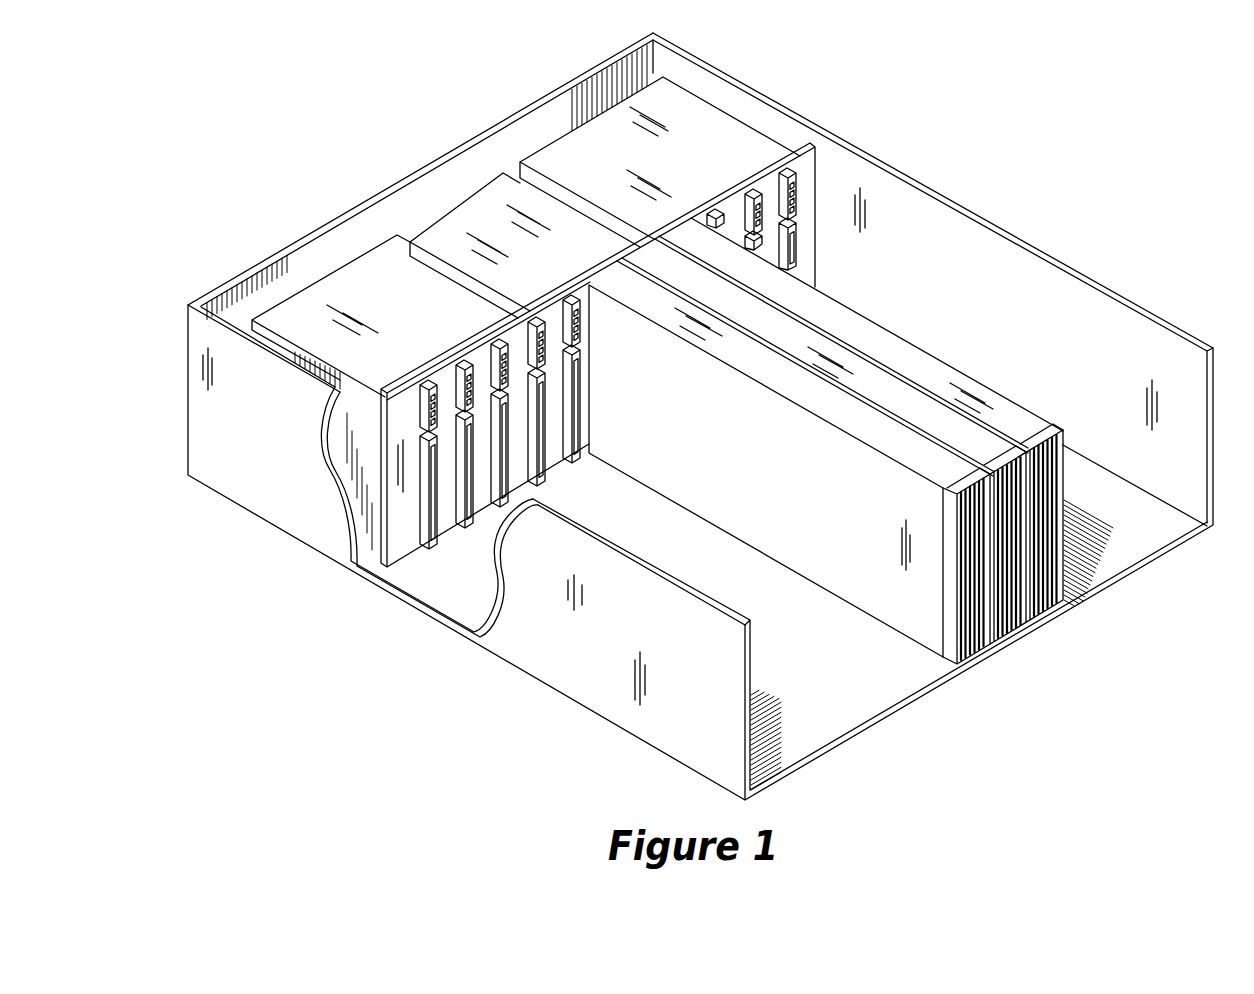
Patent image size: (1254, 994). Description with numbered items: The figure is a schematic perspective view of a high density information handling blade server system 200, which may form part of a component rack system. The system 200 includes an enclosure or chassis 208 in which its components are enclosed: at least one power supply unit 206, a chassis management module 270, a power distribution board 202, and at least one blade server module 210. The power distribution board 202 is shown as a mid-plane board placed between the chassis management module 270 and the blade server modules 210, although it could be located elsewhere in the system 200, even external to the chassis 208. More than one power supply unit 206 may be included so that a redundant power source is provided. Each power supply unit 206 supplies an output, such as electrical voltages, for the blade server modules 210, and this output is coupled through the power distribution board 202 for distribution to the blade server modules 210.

The information handling server system 200 is at (448, 684).
The power distribution board 202 is at (773, 171).
The power supply unit 206 is at (437, 330).
The chassis 208 is at (944, 203).
The blade server module 210 is at (1057, 610).
The chassis management module 270 is at (573, 271).